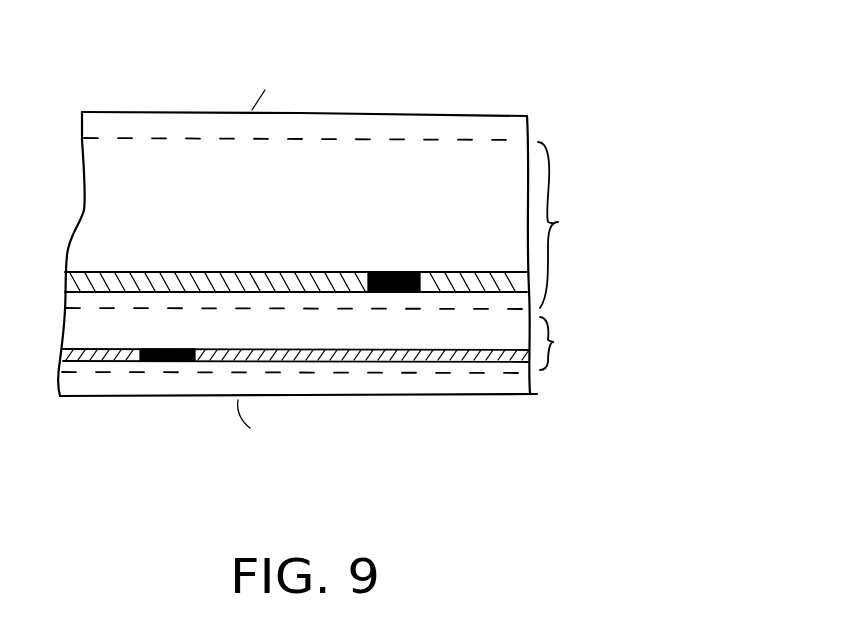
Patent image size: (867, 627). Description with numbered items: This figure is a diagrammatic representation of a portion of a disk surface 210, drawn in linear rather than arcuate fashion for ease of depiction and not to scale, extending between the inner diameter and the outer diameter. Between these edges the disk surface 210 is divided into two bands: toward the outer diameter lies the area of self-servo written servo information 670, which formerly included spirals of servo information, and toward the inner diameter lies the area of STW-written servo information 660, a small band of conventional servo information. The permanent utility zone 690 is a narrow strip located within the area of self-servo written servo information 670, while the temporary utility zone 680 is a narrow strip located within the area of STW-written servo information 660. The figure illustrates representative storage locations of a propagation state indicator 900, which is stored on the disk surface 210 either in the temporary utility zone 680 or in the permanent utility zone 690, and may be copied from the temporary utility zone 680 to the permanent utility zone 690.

The disk surface 210 is at (446, 80).
The permanent utility zone 690 is at (255, 274).
The temporary utility zone 680 is at (385, 353).
The propagation state indicator 900 is at (388, 271).
The area of self-servo written servo information 670 is at (584, 225).
The area of STW-written servo information 660 is at (575, 343).